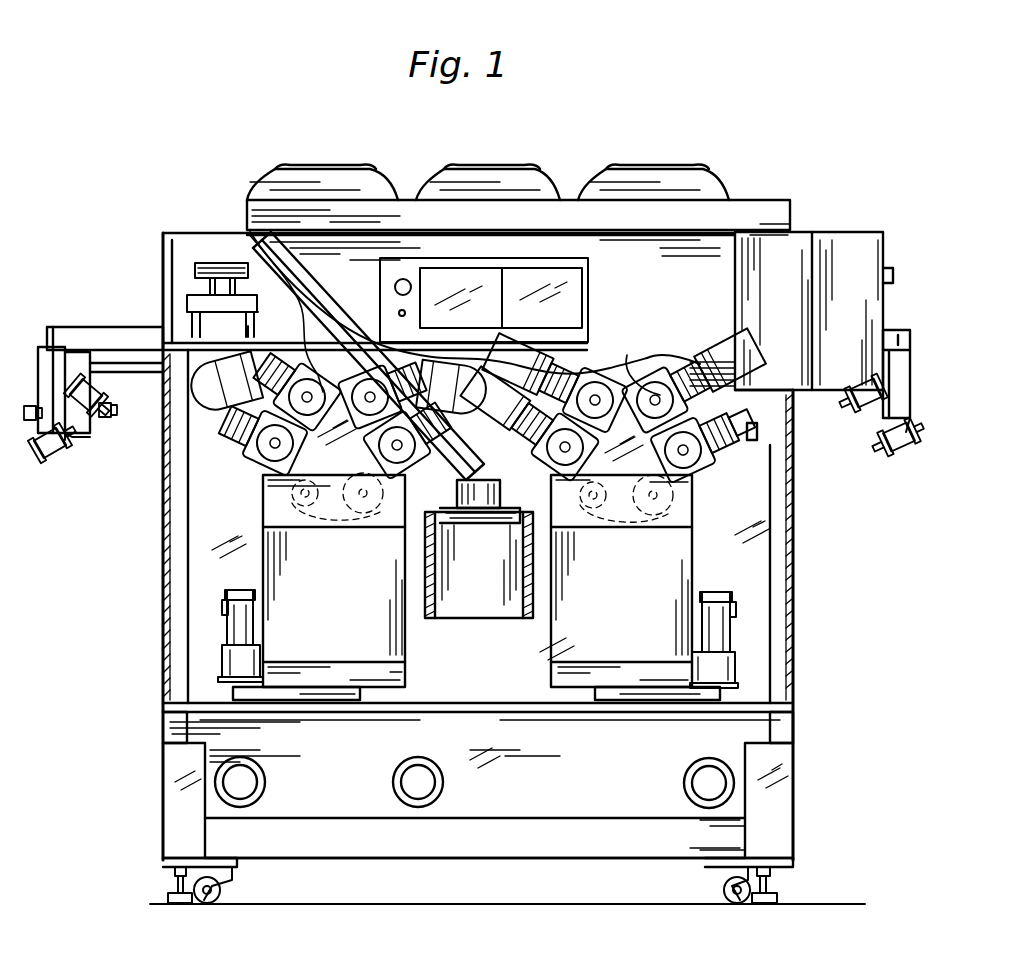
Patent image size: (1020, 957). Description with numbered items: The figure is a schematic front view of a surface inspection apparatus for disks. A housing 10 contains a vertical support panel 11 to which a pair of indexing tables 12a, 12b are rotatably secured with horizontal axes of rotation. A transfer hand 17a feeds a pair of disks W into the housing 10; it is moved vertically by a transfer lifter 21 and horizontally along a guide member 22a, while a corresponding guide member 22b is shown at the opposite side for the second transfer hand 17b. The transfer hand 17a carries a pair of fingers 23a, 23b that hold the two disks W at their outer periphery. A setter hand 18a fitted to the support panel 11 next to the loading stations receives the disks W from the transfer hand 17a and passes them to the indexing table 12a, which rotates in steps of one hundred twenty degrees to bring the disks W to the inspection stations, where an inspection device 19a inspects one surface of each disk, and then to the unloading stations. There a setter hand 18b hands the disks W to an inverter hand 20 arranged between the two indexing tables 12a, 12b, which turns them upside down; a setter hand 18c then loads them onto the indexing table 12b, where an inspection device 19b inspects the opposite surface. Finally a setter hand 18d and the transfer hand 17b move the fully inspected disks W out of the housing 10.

The housing 10 is at (752, 199).
The vertical support panel 11 is at (747, 547).
The indexing table 12a is at (297, 465).
The indexing table 12b is at (692, 488).
The transfer hand 17a is at (88, 442).
The transfer hand 17b is at (902, 452).
The setter hand 18a is at (225, 397).
The setter hand 18b is at (368, 380).
The setter hand 18c is at (527, 380).
The setter hand 18d is at (698, 405).
The inspection device 19a is at (377, 640).
The inspection device 19b is at (590, 625).
The inverter hand 20 is at (490, 580).
The transfer lifter 21 is at (57, 380).
The guide member 22a is at (80, 335).
The right mounting plate 22b is at (891, 333).
The finger 23a is at (41, 457).
The finger 23b is at (104, 388).
The disk W is at (247, 232).